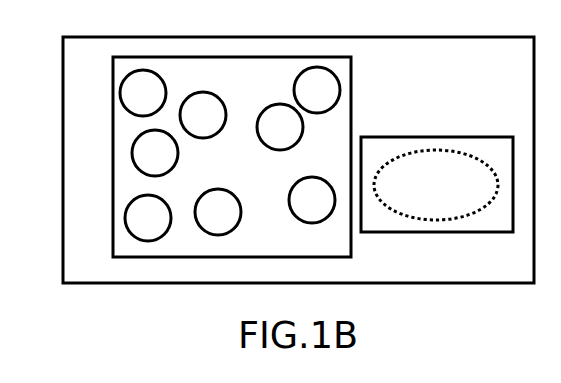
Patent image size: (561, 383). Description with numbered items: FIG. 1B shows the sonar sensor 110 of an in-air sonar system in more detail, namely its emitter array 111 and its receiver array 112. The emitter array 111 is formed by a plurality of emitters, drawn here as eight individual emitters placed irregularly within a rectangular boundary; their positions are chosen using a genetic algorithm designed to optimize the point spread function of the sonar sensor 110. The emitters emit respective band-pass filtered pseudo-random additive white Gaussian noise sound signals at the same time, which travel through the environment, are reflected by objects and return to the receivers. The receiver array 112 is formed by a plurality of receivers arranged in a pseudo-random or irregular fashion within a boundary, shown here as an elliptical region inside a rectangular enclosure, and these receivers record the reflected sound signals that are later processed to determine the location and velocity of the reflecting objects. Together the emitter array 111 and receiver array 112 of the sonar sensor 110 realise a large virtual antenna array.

The sonar sensor 110 is at (106, 70).
The emitter array 111 is at (232, 157).
The receiver array 112 is at (437, 184).